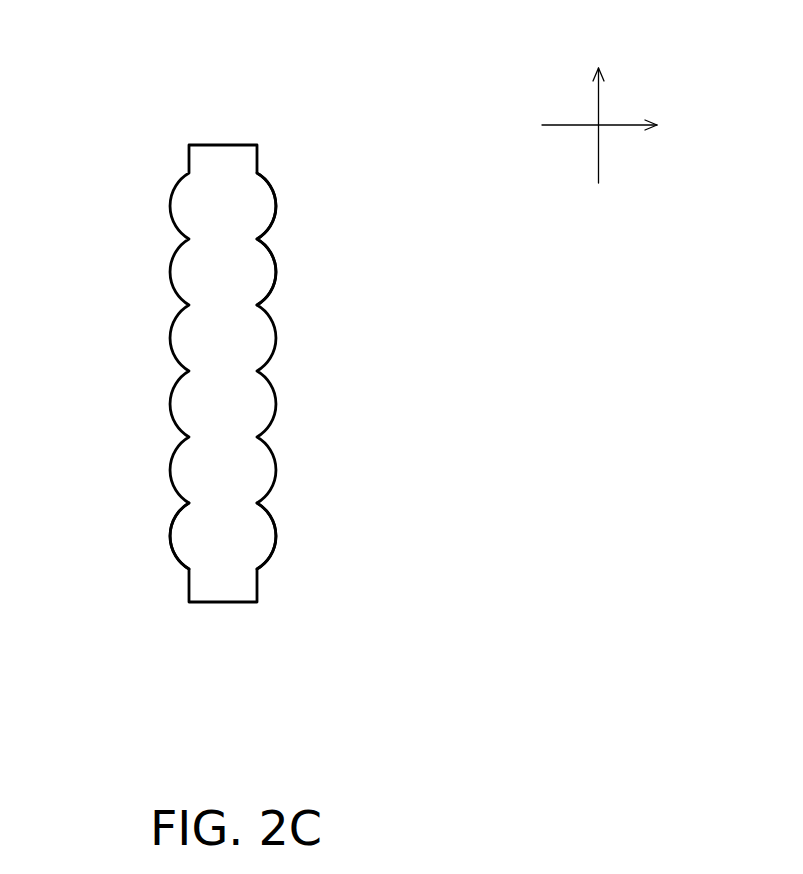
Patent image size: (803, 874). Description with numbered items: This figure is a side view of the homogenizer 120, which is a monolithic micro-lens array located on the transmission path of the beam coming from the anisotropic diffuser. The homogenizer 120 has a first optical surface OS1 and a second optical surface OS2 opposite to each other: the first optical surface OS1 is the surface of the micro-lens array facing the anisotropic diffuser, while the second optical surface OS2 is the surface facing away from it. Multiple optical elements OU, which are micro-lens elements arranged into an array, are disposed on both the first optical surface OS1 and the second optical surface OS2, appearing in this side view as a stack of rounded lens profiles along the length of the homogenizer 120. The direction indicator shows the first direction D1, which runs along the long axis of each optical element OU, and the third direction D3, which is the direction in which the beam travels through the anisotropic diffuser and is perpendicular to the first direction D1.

The homogenizer 120 is at (595, 690).
The optical element OU is at (277, 272).
The first optical surface OS1 is at (168, 540).
The second optical surface OS2 is at (275, 540).
The first direction D1 is at (611, 105).
The third direction D3 is at (617, 130).